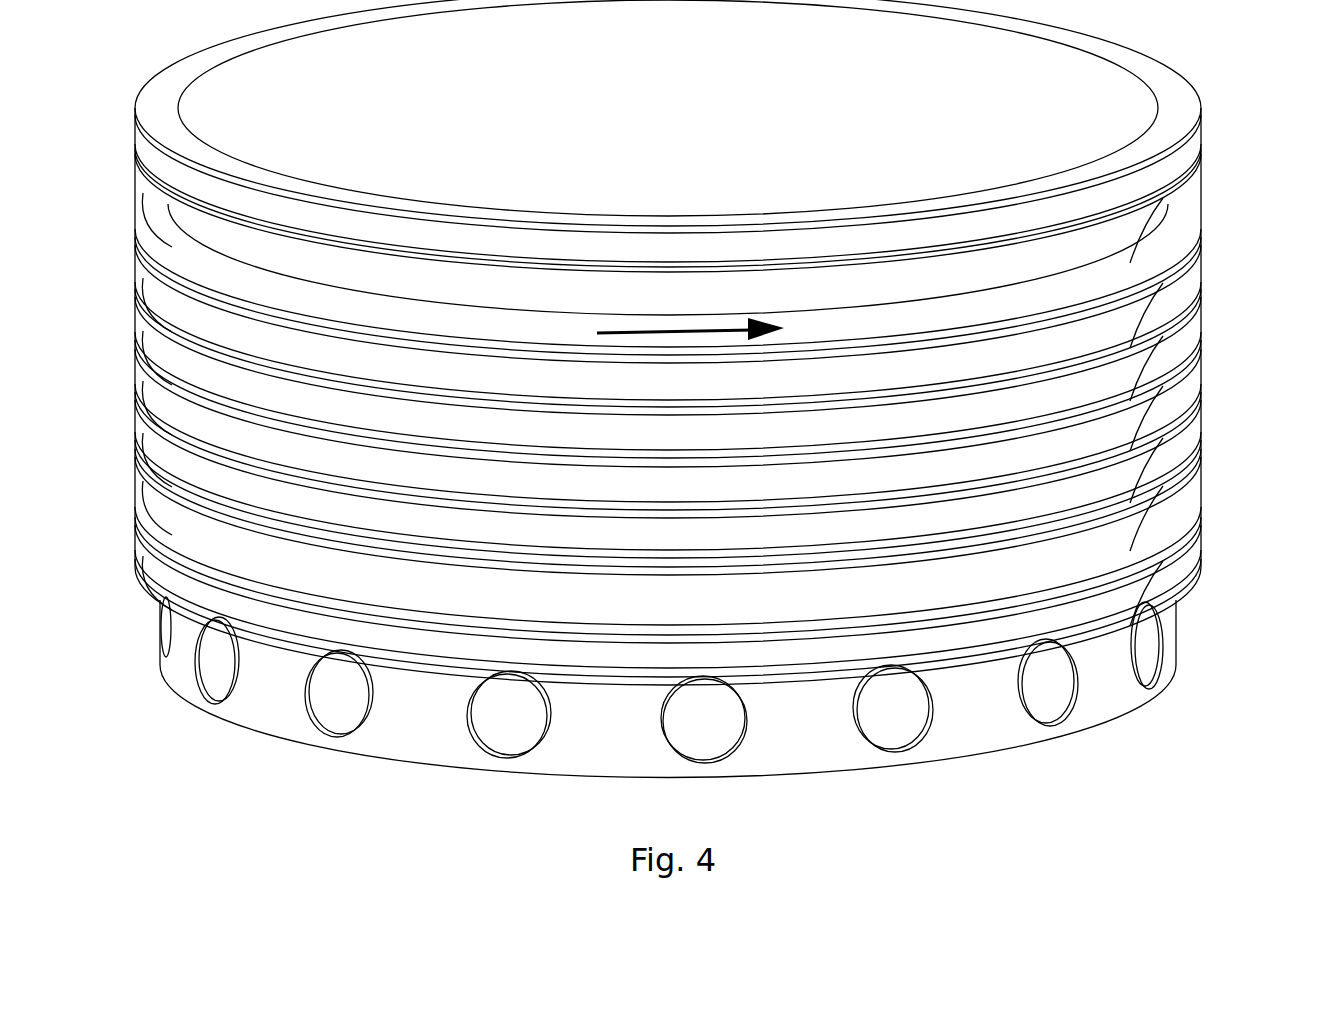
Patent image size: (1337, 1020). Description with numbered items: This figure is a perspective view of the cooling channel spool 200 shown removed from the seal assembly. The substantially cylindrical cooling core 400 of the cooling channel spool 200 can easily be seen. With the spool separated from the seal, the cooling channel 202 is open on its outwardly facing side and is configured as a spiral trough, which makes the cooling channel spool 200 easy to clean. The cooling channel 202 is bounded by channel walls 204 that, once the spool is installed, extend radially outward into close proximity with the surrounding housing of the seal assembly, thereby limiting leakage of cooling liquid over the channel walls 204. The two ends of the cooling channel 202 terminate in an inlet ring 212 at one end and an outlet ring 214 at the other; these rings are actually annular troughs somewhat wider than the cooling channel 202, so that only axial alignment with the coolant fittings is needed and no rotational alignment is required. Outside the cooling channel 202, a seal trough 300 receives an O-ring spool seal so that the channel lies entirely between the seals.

The cooling core 400 is at (673, 125).
The seal trough 300 is at (1200, 138).
The cooling channel spool 200 is at (730, 435).
The cooling channel 202 is at (1145, 302).
The channel walls 204 is at (1198, 242).
The inlet ring 212 is at (192, 226).
The outlet ring 214 is at (1147, 525).